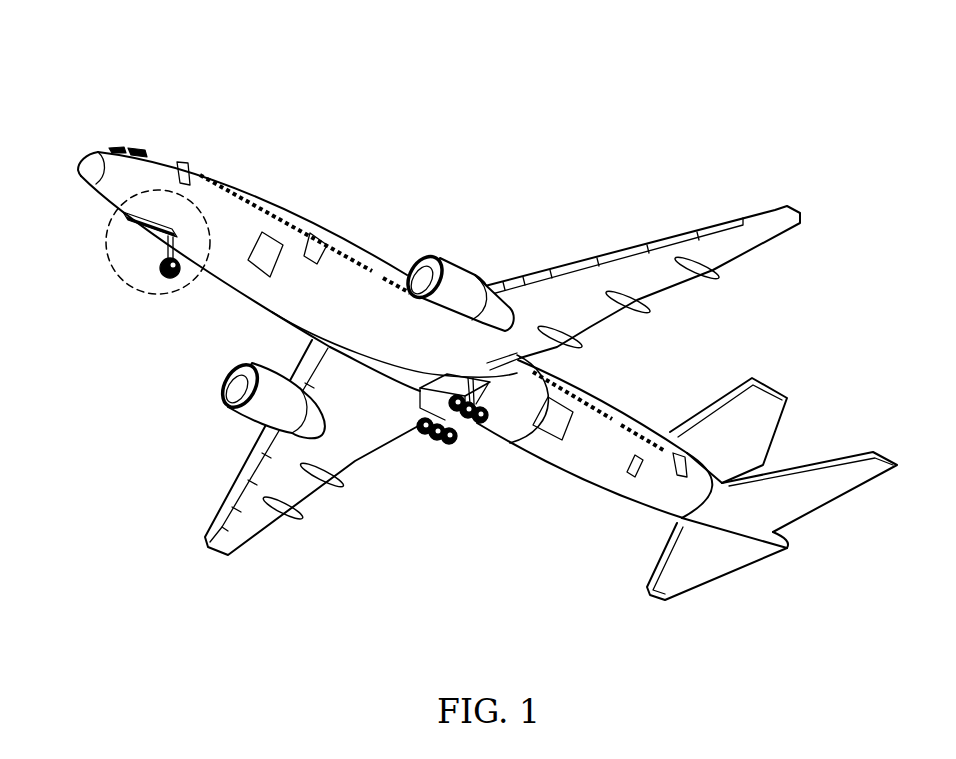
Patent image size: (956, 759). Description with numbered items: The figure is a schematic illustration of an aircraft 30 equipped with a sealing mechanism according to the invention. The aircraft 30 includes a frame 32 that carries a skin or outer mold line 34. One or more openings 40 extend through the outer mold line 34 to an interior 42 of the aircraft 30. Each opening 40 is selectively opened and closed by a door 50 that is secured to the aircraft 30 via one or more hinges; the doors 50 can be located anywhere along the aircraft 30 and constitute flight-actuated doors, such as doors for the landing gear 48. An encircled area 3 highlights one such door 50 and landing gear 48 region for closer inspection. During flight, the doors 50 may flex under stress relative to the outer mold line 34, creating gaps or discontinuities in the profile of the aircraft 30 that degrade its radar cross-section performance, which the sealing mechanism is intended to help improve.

The detail view circle (FIG. 3 area) 3 is at (126, 288).
The aircraft 30 is at (487, 353).
The frame 32 is at (433, 347).
The skin or outer mold line (OML) 34 is at (625, 461).
The opening 40 is at (299, 300).
The interior 42 is at (222, 265).
The landing gear 48 is at (172, 280).
The door 50 is at (125, 222).